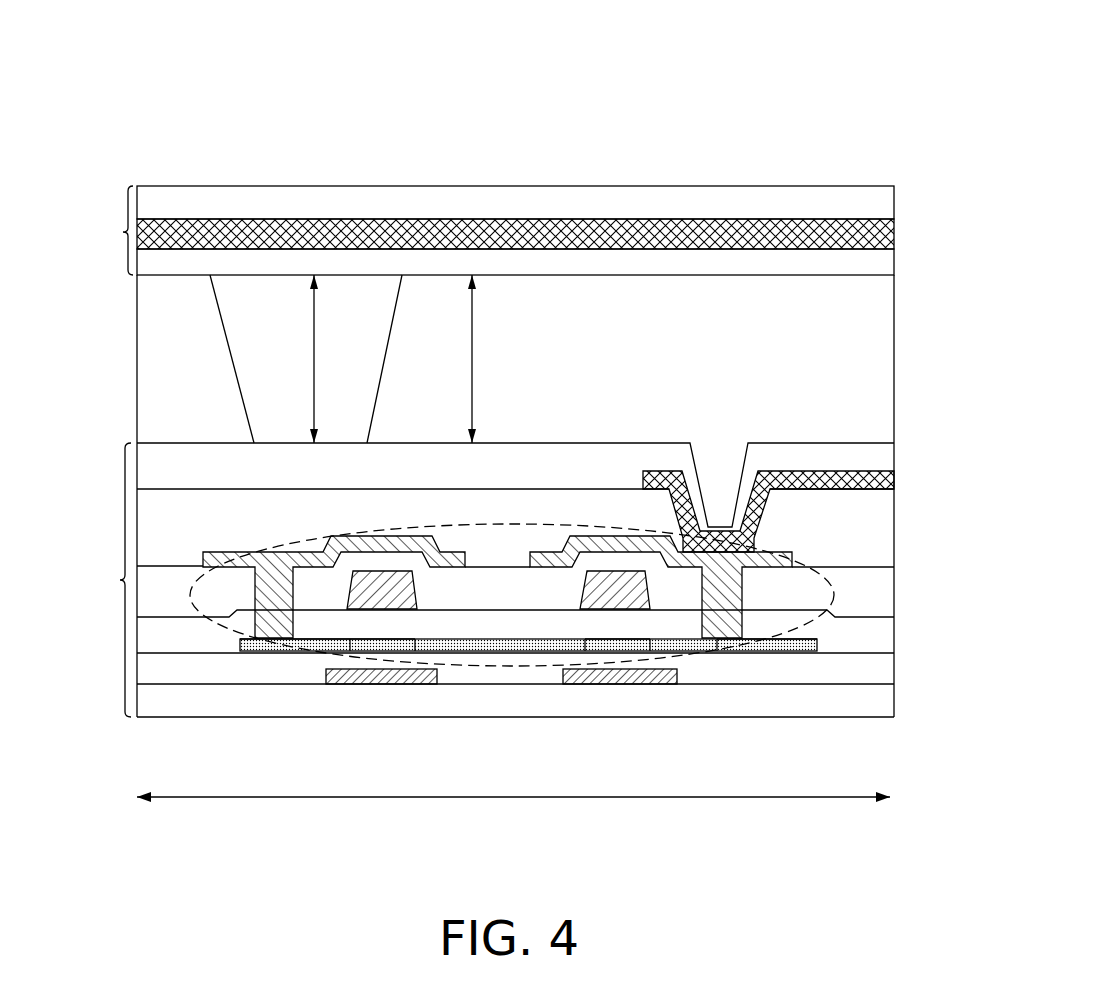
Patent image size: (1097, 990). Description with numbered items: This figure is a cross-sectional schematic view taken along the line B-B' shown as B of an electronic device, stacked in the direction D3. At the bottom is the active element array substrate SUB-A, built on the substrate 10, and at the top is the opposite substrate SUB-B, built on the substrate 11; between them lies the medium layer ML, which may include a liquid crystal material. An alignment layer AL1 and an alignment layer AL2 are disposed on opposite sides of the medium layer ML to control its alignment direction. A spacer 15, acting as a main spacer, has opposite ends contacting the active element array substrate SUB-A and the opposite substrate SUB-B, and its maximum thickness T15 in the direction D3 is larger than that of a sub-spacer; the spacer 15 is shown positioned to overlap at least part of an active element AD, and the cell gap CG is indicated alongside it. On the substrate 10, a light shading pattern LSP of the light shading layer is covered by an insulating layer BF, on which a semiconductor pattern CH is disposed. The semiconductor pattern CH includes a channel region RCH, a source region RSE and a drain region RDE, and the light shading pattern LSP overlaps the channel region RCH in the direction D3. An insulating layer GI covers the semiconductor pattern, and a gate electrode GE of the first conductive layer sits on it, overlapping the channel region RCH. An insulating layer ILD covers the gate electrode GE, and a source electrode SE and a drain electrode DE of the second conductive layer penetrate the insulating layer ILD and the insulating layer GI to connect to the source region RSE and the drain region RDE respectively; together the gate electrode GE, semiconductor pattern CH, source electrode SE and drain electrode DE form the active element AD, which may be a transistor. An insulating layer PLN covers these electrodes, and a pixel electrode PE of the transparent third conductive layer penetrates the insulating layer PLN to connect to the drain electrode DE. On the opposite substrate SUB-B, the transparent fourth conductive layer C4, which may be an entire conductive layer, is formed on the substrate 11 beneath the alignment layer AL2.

The direction D3 is at (943, 112).
The opposite substrate SUB-B is at (88, 230).
The active element array substrate SUB-A is at (87, 580).
The substrate 11 is at (888, 205).
The fourth conductive layer C4 is at (888, 232).
The alignment layer AL2 is at (888, 262).
The medium layer ML is at (888, 360).
The spacer 15 is at (247, 362).
The maximum thickness T15 is at (335, 359).
The cell gap CG is at (487, 359).
The alignment layer AL1 is at (888, 455).
The pixel electrode PE is at (888, 482).
The insulating layer PLN is at (888, 535).
The active element AD is at (836, 593).
The insulating layer ILD is at (888, 602).
The insulating layer GI is at (888, 634).
The insulating layer BF is at (888, 670).
The substrate 10 is at (888, 707).
The source electrode SE is at (272, 632).
The drain electrode DE is at (718, 632).
The gate electrode GE is at (402, 588).
The semiconductor pattern CH is at (517, 652).
The source region RSE is at (245, 655).
The channel region RCH is at (364, 657).
The drain region RDE is at (801, 657).
The light shading pattern LSP is at (415, 684).
The line B-B' B is at (516, 797).